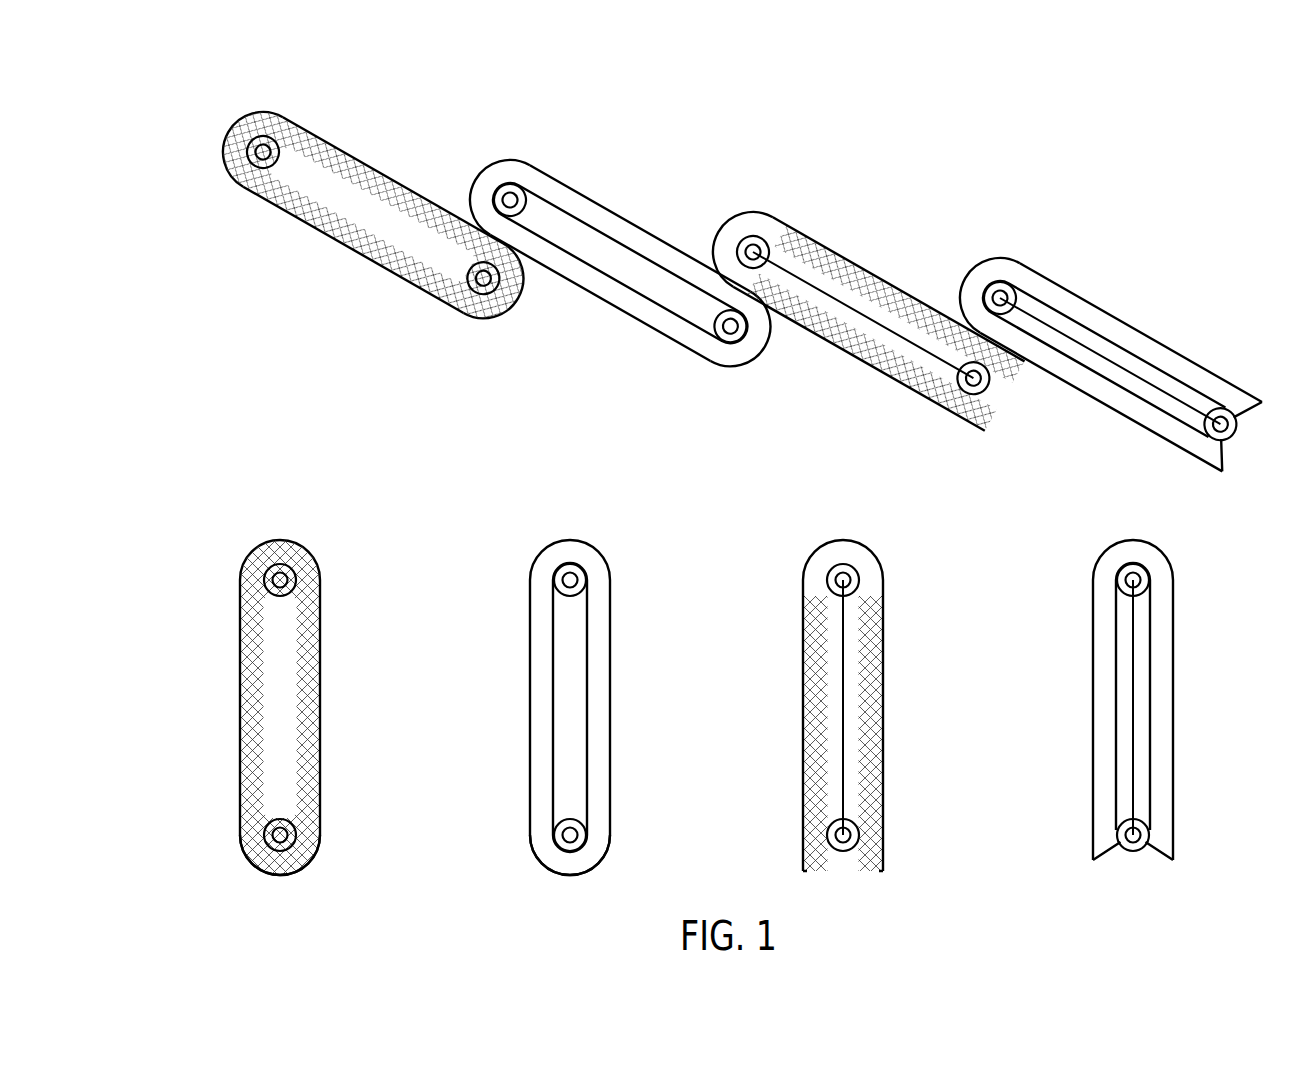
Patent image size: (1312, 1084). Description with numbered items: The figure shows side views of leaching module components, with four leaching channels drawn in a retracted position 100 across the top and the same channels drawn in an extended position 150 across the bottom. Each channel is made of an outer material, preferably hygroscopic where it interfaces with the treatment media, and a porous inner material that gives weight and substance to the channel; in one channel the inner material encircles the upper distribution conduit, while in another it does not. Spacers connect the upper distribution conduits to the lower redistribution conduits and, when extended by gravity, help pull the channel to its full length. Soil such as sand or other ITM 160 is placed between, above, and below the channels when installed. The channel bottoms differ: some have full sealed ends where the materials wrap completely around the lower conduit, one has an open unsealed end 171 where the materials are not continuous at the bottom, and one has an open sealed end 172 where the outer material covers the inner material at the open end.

The retracted position 100 is at (178, 127).
The extended position 150 is at (182, 520).
The ITM 160 is at (428, 846).
The open unsealed end 171 is at (863, 883).
The open sealed end 172 is at (1165, 883).